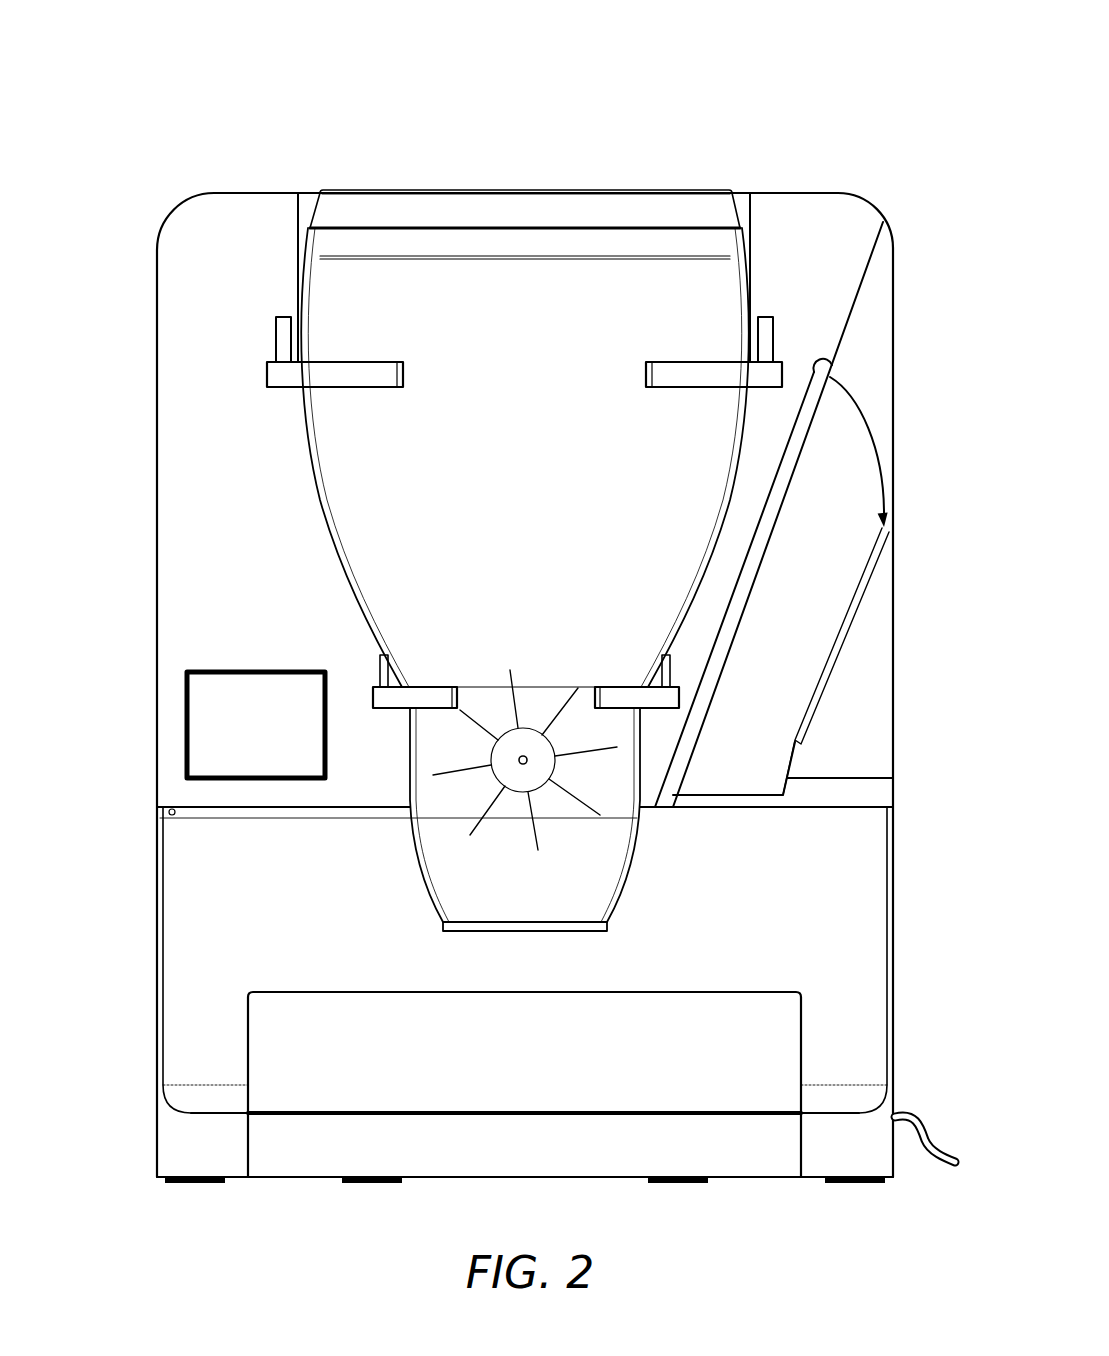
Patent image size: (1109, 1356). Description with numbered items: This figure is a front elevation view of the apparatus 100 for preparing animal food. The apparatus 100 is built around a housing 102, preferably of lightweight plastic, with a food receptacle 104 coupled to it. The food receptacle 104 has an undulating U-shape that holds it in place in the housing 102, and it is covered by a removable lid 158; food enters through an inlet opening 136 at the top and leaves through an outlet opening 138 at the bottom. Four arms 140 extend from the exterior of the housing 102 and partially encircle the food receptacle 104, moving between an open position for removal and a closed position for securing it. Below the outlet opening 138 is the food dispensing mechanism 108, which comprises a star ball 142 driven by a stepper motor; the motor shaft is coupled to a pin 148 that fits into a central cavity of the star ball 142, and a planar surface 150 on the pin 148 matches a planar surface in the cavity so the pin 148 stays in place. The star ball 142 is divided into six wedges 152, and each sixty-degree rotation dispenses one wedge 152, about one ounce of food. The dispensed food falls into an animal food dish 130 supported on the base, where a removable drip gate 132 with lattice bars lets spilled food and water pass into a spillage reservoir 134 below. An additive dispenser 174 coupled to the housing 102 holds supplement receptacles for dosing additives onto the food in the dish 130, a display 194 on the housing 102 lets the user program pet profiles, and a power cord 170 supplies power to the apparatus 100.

The apparatus 100 is at (712, 97).
The housing 102 is at (910, 277).
The food receptacle 104 is at (705, 298).
The food dispensing mechanism 108 is at (423, 788).
The animal food dish 130 is at (770, 1035).
The drip gate 132 is at (723, 1132).
The spillage reservoir 134 is at (430, 1148).
The inlet opening 136 is at (367, 243).
The outlet opening 138 is at (467, 890).
The arm 140 is at (290, 375).
The star ball 142 is at (540, 787).
The pin 148 is at (519, 763).
The planar surface 150 is at (559, 765).
The wedge 152 is at (563, 665).
The removable lid 158 is at (620, 210).
The power cord 170 is at (928, 1133).
The additive dispenser 174 is at (840, 467).
The display 194 is at (205, 728).